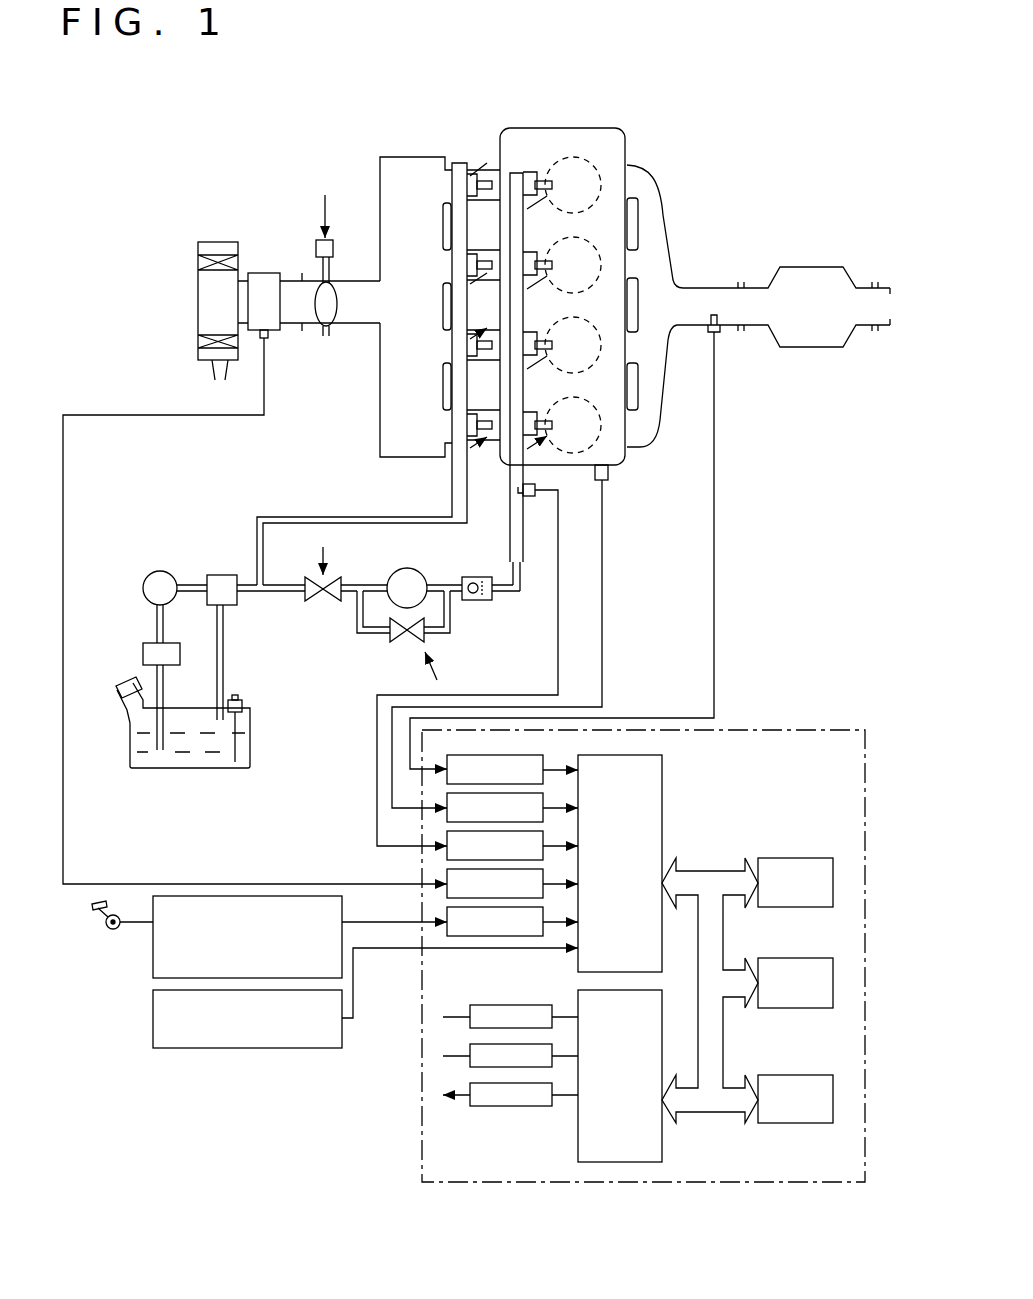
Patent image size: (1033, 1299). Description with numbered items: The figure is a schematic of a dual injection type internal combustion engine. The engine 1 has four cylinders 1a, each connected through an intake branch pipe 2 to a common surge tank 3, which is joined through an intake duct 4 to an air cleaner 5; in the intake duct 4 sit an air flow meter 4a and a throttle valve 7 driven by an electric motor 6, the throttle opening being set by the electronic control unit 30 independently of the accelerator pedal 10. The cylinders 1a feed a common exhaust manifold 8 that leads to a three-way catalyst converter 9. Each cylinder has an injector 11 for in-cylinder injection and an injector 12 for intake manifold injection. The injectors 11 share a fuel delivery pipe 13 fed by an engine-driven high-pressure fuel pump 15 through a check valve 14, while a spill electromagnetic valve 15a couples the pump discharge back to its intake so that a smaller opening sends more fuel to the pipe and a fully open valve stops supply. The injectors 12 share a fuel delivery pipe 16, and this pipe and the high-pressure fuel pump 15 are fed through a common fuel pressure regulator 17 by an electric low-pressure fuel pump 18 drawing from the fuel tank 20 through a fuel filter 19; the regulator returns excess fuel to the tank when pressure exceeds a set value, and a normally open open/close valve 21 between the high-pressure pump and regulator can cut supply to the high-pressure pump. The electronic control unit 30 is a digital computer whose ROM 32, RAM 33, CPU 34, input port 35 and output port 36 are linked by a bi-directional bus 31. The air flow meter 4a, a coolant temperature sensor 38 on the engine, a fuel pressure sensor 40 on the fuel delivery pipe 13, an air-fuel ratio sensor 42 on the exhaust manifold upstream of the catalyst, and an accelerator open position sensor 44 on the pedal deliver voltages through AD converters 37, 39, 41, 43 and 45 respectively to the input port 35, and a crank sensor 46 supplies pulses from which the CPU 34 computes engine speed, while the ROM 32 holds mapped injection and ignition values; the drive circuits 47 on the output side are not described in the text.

The engine 1 is at (629, 126).
The cylinder 1a is at (595, 163).
The intake branch pipe 2 is at (460, 165).
The surge tank 3 is at (398, 157).
The intake duct 4 is at (352, 281).
The air flow meter 4a is at (265, 273).
The air cleaner 5 is at (198, 300).
The electric motor 6 is at (318, 243).
The throttle valve 7 is at (332, 310).
The exhaust manifold 8 is at (664, 204).
The three-way catalyst converter 9 is at (810, 267).
The accelerator pedal 10 is at (105, 925).
The injector for in-cylinder injection 11 is at (568, 425).
The injector for intake manifold injection 12 is at (477, 185).
The fuel delivery pipe 13 is at (515, 173).
The check valve 14 is at (480, 601).
The high-pressure fuel pump 15 is at (412, 573).
The spill electromagnetic valve 15a is at (410, 645).
The fuel delivery pipe 16 is at (452, 480).
The fuel pressure regulator 17 is at (222, 575).
The low-pressure fuel pump 18 is at (162, 571).
The fuel filter 19 is at (145, 648).
The fuel tank 20 is at (190, 768).
The open/close valve 21 is at (318, 602).
The electronic control unit 30 is at (824, 722).
The bi-directional bus 31 is at (705, 872).
The ROM 32 is at (785, 858).
The RAM 33 is at (785, 958).
The CPU 34 is at (785, 1075).
The input port 35 is at (663, 777).
The output port 36 is at (663, 1150).
The AD converter 37 is at (437, 880).
The coolant temperature sensor 38 is at (608, 478).
The AD converter 39 is at (437, 804).
The fuel pressure sensor 40 is at (535, 491).
The AD converter 41 is at (437, 842).
The air-fuel ratio sensor 42 is at (718, 333).
The AD converter 43 is at (437, 766).
The accelerator open position sensor 44 is at (153, 940).
The AD converter 45 is at (440, 916).
The crank sensor 46 is at (153, 1022).
The drive circuit 47 is at (443, 1022).